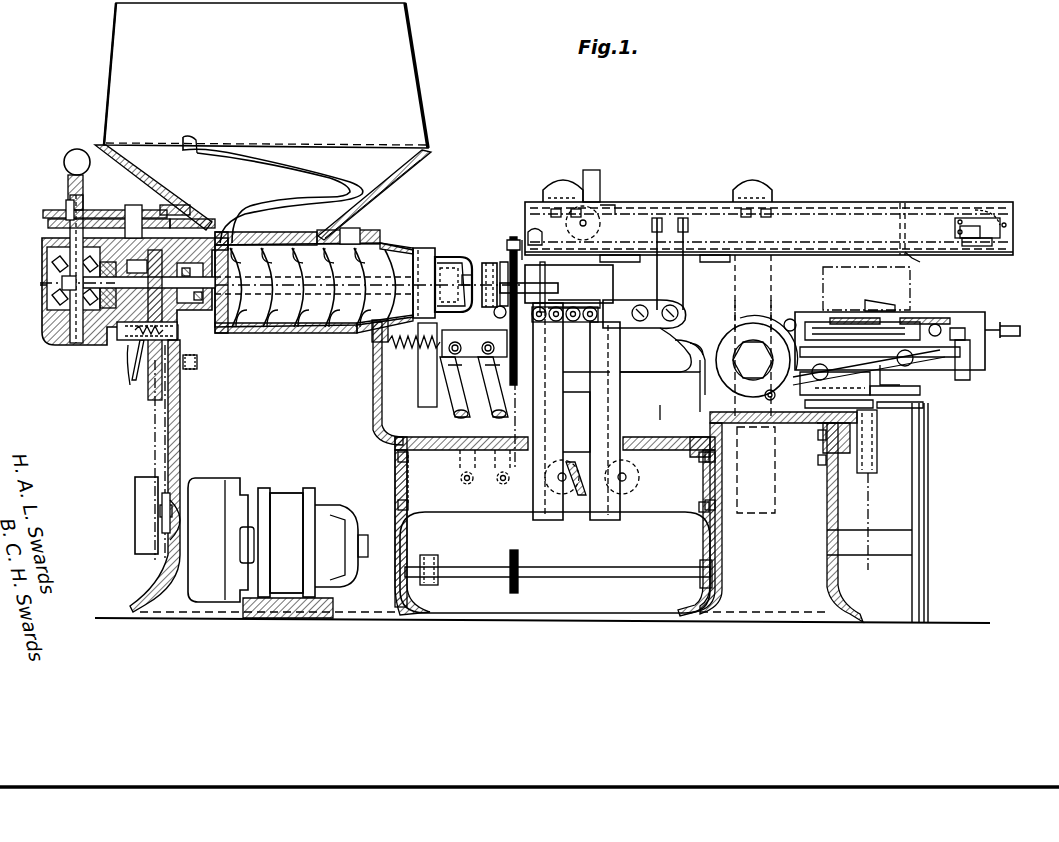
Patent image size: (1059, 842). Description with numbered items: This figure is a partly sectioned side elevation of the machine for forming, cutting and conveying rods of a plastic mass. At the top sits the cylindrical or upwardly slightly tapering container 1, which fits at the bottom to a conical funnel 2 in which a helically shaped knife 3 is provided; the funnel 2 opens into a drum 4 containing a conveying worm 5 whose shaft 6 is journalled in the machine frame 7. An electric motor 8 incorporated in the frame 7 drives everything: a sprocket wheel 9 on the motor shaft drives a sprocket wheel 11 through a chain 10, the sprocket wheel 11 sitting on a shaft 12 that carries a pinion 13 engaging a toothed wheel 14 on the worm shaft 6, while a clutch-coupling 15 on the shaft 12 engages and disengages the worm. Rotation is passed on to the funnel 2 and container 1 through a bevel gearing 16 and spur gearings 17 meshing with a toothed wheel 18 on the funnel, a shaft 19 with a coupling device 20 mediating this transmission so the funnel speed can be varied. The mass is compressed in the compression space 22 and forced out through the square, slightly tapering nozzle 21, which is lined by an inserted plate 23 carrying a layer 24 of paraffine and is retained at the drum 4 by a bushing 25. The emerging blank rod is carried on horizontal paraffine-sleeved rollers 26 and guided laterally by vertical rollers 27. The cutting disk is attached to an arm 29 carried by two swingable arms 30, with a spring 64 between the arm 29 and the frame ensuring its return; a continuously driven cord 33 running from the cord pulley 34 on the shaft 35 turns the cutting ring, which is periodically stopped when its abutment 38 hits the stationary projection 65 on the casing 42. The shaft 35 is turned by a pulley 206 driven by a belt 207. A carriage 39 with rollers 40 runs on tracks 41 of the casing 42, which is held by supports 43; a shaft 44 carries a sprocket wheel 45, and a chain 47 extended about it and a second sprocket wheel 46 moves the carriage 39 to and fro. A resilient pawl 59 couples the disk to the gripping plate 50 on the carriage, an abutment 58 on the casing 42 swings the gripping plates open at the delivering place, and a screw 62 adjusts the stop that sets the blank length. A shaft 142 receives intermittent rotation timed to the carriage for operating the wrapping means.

The container 1 is at (112, 55).
The conical funnel 2 is at (415, 167).
The knife 3 is at (272, 165).
The drum 4 is at (295, 330).
The conveying worm 5 is at (340, 330).
The shaft of the conveying worm 6 is at (100, 335).
The machine frame 7 is at (278, 527).
The electric motor 8 is at (285, 505).
The sprocket wheel 9 is at (182, 490).
The chain 10 is at (182, 432).
The sprocket wheel 11 is at (190, 372).
The shaft 12 is at (180, 332).
The pinion 13 is at (152, 390).
The toothed wheel 14 is at (150, 320).
The clutch-coupling 15 is at (133, 378).
The bevel gearing 16 is at (72, 285).
The spur gearings 17 is at (115, 212).
The toothed wheel 18 is at (360, 236).
The shaft 19 is at (72, 270).
The coupling device 20 is at (68, 198).
The nozzle 21 is at (462, 262).
The compression space 22 is at (420, 248).
The plate 23 is at (470, 272).
The layer of paraffine 24 is at (448, 257).
The bushing 25 is at (450, 230).
The rollers 26 is at (530, 294).
The vertical rollers 27 is at (489, 263).
The arm 29 is at (450, 378).
The arms 30 is at (492, 400).
The cord 33 is at (503, 512).
The cord pulley 34 is at (512, 585).
The shaft 35 is at (588, 572).
The abutment 38 is at (512, 237).
The carriage 39 is at (470, 405).
The rollers 40 is at (538, 232).
The tracks 41 is at (769, 265).
The casing 42 is at (840, 193).
The supports 43 is at (570, 185).
The shaft 44 is at (608, 207).
The sprocket wheel 45 is at (600, 222).
The second sprocket wheel 46 is at (975, 215).
The chain 47 is at (865, 212).
The gripping plate 50 is at (598, 282).
The abutment 58 is at (912, 258).
The resilient pawl 59 is at (540, 290).
The screw 62 is at (625, 300).
The spring 64 is at (375, 380).
The projection 65 is at (522, 240).
The shaft 142 is at (752, 345).
The pulley 206 is at (440, 562).
The belt 207 is at (395, 490).